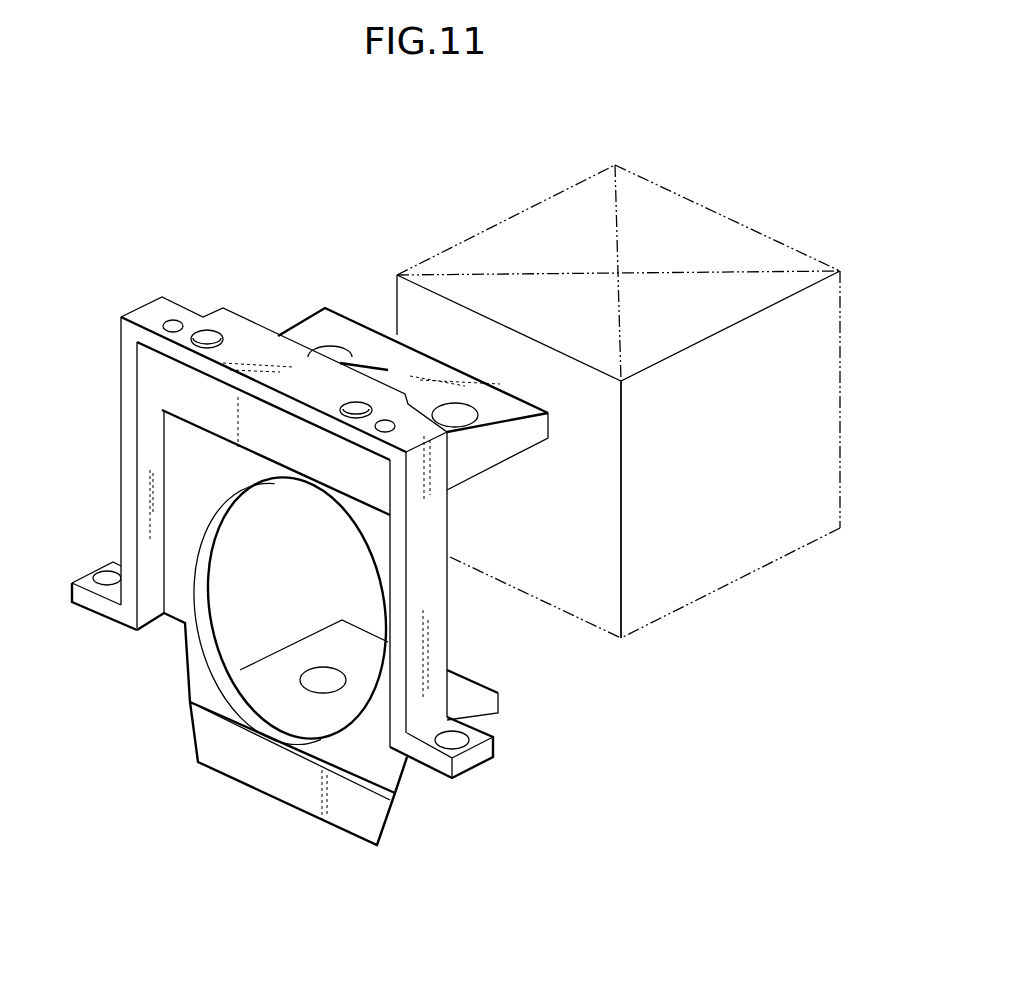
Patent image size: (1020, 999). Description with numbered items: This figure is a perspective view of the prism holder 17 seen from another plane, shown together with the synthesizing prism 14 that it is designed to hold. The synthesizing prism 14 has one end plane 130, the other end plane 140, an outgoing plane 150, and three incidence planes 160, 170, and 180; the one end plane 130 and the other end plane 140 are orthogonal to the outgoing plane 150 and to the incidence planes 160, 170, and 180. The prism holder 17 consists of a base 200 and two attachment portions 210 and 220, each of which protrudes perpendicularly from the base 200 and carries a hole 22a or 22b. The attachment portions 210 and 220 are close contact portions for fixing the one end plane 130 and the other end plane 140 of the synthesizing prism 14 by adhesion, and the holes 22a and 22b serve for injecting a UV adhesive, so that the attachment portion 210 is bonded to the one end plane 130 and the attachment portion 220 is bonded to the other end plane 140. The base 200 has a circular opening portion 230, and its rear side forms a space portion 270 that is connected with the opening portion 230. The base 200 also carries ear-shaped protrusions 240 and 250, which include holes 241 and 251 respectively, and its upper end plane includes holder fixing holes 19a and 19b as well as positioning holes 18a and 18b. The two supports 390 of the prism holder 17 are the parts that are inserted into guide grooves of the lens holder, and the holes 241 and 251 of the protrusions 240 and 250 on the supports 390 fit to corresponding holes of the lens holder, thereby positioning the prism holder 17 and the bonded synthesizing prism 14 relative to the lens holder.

The synthesizing prism 14 is at (846, 260).
The prism holder 17 is at (139, 745).
The positioning hole 18a is at (384, 424).
The positioning hole 18b is at (173, 319).
The holder fixing hole 19a is at (350, 404).
The holder fixing hole 19b is at (207, 330).
The hole 22a is at (458, 418).
The hole 22b is at (323, 678).
The one end plane 130 is at (705, 226).
The other end plane 140 is at (673, 622).
The outgoing plane 150 is at (579, 608).
The incidence plane 160 is at (505, 229).
The incidence plane 170 is at (846, 515).
The incidence plane 180 is at (734, 565).
The base 200 is at (150, 602).
The attachment portion 210 is at (467, 470).
The attachment portion 220 is at (488, 682).
The circular opening portion 230 is at (210, 592).
The ear-shaped protrusion 240 is at (88, 578).
The hole 241 is at (98, 585).
The ear-shaped protrusion 250 is at (477, 760).
The hole 251 is at (447, 748).
The space portion 270 is at (180, 455).
The support 390 is at (128, 397).